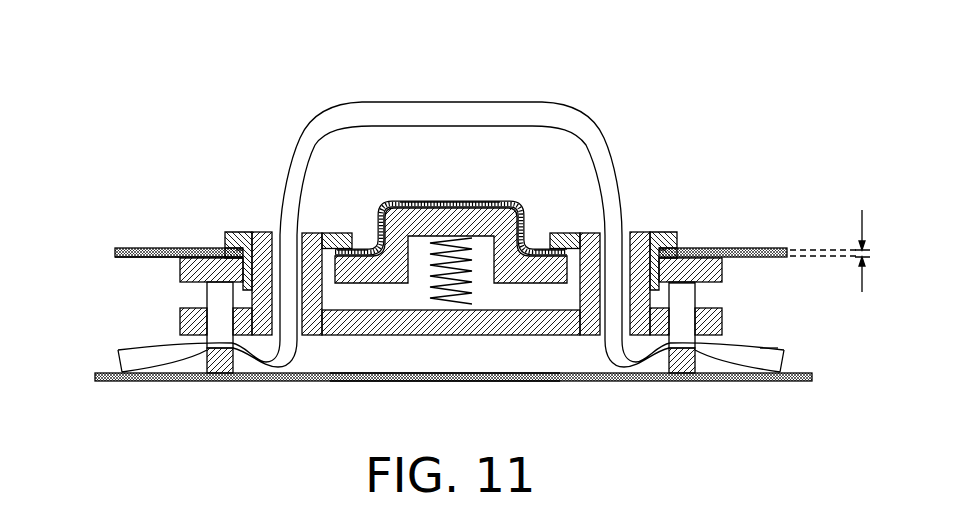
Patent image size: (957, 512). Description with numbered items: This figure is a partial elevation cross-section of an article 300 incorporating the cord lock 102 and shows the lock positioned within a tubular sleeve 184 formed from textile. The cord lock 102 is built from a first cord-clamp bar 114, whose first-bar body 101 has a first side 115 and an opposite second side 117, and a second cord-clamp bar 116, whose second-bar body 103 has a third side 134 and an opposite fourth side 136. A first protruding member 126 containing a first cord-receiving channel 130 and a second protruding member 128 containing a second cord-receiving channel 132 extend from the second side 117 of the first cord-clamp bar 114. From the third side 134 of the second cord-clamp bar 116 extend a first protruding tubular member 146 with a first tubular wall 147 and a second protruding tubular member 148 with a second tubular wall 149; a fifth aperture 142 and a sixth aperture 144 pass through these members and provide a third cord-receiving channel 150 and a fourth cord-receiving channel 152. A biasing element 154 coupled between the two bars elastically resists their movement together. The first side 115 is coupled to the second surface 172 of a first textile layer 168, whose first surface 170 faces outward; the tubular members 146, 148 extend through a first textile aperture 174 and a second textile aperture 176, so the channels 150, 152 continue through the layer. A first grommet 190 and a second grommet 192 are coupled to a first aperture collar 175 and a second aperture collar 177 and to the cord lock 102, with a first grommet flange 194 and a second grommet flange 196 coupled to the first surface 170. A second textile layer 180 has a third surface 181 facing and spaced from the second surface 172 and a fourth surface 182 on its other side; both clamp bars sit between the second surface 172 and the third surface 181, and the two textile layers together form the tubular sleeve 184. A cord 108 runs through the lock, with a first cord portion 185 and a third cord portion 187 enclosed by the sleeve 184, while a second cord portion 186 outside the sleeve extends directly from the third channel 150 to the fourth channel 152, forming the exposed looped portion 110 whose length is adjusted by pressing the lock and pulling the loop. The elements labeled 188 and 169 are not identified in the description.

The article 300 is at (728, 38).
The looped portion 110 is at (461, 205).
The second cord portion 186 is at (423, 110).
The outer layer of diaphragm 188 is at (560, 122).
The first surface 170 is at (139, 258).
The second surface 172 is at (141, 250).
The first textile aperture 174 is at (232, 249).
The first aperture collar 175 is at (225, 247).
The first-bar body 101 is at (180, 268).
The first tubular wall 147 is at (237, 232).
The third cord-receiving channel 150 is at (265, 232).
The third side 134 is at (208, 317).
The second-bar body 103 is at (182, 318).
The tubular sleeve 184 is at (108, 324).
The first cord-receiving channel 130 is at (220, 353).
The first cord portion 185 is at (137, 356).
The first protruding member 126 is at (237, 370).
The second textile layer 180 is at (533, 382).
The third surface 181 is at (384, 373).
The fourth surface 182 is at (392, 381).
The fourth side 136 is at (517, 335).
The first protruding tubular member 146 is at (315, 300).
The second protruding tubular member 148 is at (582, 295).
The fifth aperture 142 is at (330, 232).
The sixth aperture 144 is at (578, 233).
The biasing element 154 is at (470, 301).
The first grommet flange 194 is at (405, 201).
The second grommet flange 196 is at (492, 201).
The first grommet 190 is at (345, 248).
The second grommet 192 is at (532, 248).
The fourth cord-receiving channel 152 is at (628, 232).
The second tubular wall 149 is at (663, 232).
The cord lock 102 is at (707, 267).
The first side 115 is at (698, 250).
The second textile aperture 176 is at (677, 248).
The second aperture collar 177 is at (678, 250).
The first textile layer 168 is at (775, 247).
The plate thickness dimension 169 is at (862, 243).
The first cord-clamp bar 114 is at (700, 283).
The second side 117 is at (698, 284).
The second cord-clamp bar 116 is at (722, 318).
The second cord-receiving channel 132 is at (683, 352).
The cord 108 is at (768, 353).
The third cord portion 187 is at (767, 357).
The second protruding member 128 is at (667, 363).